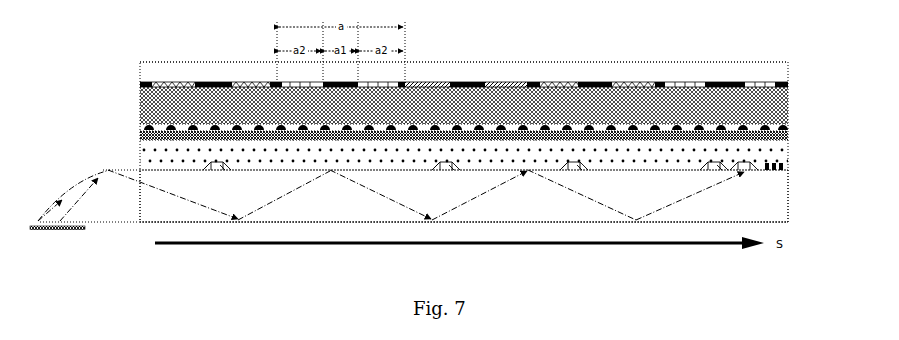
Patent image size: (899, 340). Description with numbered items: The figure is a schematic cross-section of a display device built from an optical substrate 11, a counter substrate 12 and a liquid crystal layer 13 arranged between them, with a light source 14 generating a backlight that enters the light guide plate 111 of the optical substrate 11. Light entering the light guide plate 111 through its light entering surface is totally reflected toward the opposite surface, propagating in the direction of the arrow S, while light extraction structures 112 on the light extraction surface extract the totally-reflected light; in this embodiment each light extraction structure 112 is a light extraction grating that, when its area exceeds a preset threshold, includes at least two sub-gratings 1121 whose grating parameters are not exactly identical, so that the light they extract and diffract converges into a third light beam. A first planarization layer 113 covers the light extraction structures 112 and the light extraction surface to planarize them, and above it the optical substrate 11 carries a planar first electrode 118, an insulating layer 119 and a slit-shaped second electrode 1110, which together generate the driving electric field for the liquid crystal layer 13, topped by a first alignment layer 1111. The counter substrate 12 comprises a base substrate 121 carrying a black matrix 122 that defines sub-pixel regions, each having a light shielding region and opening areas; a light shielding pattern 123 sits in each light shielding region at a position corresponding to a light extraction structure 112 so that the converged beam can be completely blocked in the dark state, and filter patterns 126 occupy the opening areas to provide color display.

The optical substrate 11 is at (458, 175).
The counter substrate 12 is at (461, 56).
The liquid crystal layer 13 is at (450, 109).
The light source 14 is at (64, 181).
The light guide plate 111 is at (770, 219).
The light extraction structures 112 is at (840, 188).
The first planarization layer 113 is at (768, 150).
The first electrode 118 is at (790, 138).
The insulating layer 119 is at (790, 131).
The base substrate 121 is at (464, 84).
The black matrix 122 is at (660, 80).
The light shielding pattern 123 is at (594, 82).
The filter pattern 126 is at (172, 80).
The second electrode 1110 is at (789, 124).
The first alignment layer 1111 is at (789, 110).
The sub-gratings 1121 is at (762, 168).